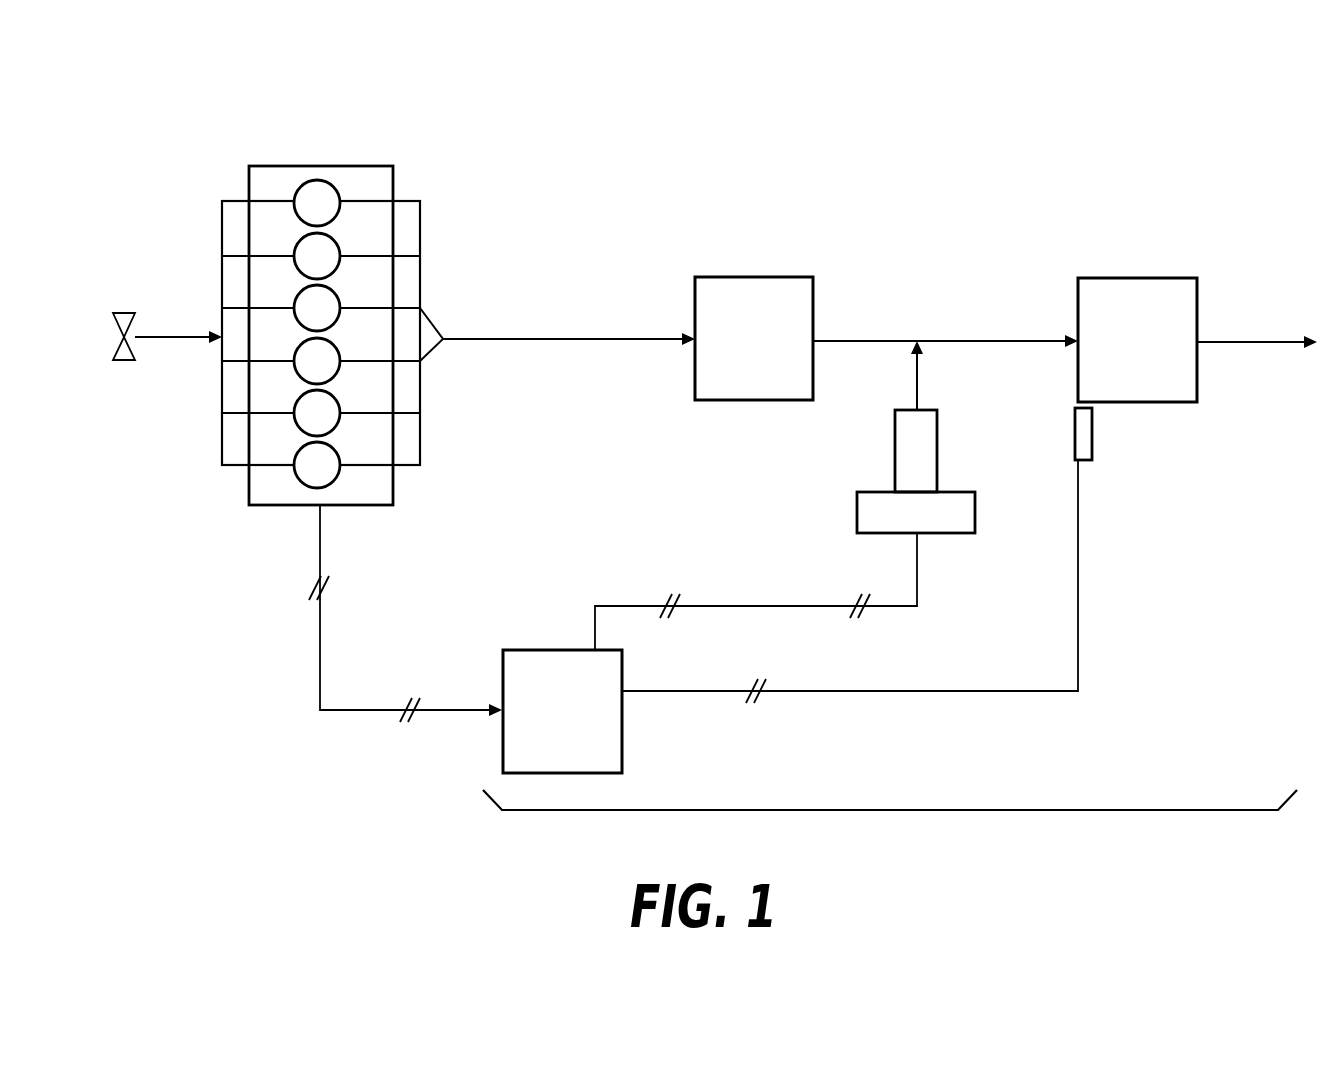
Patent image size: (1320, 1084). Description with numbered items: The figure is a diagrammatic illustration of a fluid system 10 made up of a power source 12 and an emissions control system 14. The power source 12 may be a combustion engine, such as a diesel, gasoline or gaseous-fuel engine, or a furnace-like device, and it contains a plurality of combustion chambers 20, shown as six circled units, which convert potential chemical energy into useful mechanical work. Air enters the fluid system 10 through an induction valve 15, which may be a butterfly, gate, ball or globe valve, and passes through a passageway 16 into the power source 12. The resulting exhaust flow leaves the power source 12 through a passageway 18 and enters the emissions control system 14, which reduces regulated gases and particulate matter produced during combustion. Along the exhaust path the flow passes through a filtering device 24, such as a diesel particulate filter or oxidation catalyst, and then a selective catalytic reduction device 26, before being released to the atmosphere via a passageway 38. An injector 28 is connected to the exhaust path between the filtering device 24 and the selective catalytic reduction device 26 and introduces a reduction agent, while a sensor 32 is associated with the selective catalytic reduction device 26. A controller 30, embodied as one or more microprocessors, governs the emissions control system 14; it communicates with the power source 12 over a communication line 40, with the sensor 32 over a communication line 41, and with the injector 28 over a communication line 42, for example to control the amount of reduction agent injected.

The fluid system 10 is at (1068, 146).
The power source 12 is at (332, 375).
The emissions control system 14 is at (905, 812).
The induction valve 15 is at (124, 362).
The passageway 16 is at (172, 333).
The passageway 18 is at (490, 336).
The combustion chambers 20 is at (329, 478).
The filtering device 24 is at (754, 277).
The selective catalytic reduction device 26 is at (1138, 278).
The injector 28 is at (857, 517).
The controller 30 is at (562, 650).
The sensor 32 is at (1075, 433).
The passageway 38 is at (1262, 339).
The communication line 40 is at (437, 709).
The communication line 41 is at (1078, 522).
The communication line 42 is at (716, 605).